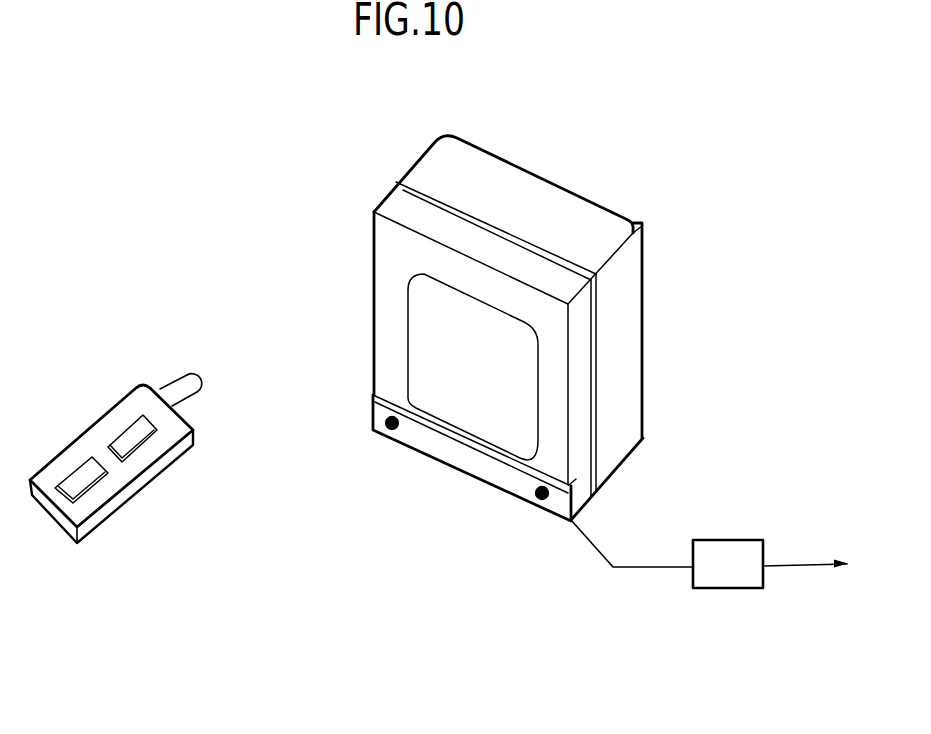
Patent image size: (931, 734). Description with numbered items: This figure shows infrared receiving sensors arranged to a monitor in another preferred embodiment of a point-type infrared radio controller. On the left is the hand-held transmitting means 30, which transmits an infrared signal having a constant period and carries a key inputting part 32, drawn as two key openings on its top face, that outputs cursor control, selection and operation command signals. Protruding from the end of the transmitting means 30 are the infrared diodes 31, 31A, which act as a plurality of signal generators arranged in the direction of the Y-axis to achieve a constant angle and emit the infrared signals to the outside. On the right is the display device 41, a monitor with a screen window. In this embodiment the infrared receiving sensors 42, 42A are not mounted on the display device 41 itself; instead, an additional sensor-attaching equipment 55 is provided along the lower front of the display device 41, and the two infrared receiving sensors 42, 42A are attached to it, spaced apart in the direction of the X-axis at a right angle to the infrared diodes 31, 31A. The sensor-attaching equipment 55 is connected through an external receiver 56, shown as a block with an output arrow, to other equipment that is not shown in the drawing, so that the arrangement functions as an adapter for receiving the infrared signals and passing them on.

The transmitting means 30 is at (55, 458).
The infrared diode 31 is at (180, 388).
The infrared diode 31A is at (194, 383).
The key inputting part 32 is at (82, 477).
The display device 41 is at (643, 322).
The infrared receiving sensor 42 is at (392, 430).
The infrared receiving sensor 42A is at (542, 500).
The sensor-attaching equipment 55 is at (462, 459).
The external receiver 56 is at (709, 554).